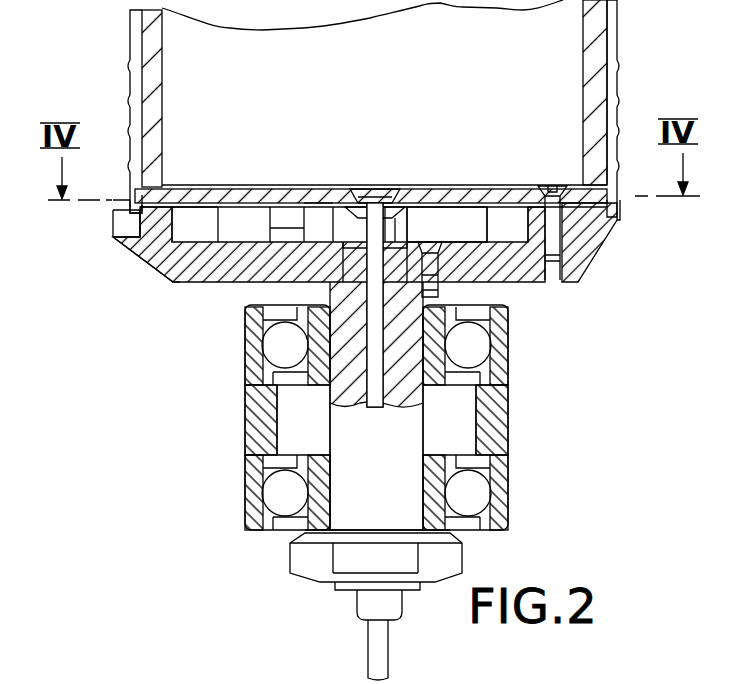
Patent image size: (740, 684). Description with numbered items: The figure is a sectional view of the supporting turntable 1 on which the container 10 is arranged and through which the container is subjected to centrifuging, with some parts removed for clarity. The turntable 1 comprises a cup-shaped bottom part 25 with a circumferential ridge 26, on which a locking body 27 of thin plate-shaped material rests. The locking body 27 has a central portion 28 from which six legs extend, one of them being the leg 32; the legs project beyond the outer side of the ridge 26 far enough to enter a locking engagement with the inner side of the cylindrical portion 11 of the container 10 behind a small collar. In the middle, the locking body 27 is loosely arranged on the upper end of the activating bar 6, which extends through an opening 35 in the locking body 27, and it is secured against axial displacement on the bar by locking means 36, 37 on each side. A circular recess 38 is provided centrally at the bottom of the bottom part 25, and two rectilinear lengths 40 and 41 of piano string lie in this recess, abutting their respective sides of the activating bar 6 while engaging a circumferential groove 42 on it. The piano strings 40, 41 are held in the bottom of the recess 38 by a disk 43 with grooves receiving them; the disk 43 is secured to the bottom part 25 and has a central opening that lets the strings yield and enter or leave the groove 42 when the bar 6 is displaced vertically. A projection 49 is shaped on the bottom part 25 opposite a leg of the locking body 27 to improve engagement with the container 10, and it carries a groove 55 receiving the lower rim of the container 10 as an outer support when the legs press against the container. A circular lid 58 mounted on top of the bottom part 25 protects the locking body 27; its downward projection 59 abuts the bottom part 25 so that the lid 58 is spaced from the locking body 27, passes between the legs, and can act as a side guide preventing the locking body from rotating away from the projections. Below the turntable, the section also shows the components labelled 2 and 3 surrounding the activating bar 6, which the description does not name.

The supporting turntable 1 is at (602, 254).
The bearing unit 2 is at (502, 417).
The shaft 3 is at (330, 402).
The activating bar 6 is at (380, 643).
The container 10 is at (610, 51).
The cylindrical portion 11 is at (616, 22).
The cup-shaped bottom part 25 is at (517, 265).
The circumferential ridge 26 is at (150, 248).
The locking body 27 is at (170, 270).
The central portion 28 is at (355, 205).
The leg 32 is at (205, 200).
The opening 35 is at (375, 190).
The locking means 36 is at (385, 200).
The locking means 37 is at (405, 190).
The circular recess 38 is at (253, 303).
The rectilinear length of piano string 40 is at (318, 205).
The rectilinear length of piano string 41 is at (400, 240).
The circumferential groove 42 is at (410, 210).
The disk 43 is at (215, 283).
The projection 49 is at (115, 230).
The groove 55 is at (115, 200).
The circular lid 58 is at (510, 193).
The projection 59 is at (583, 230).